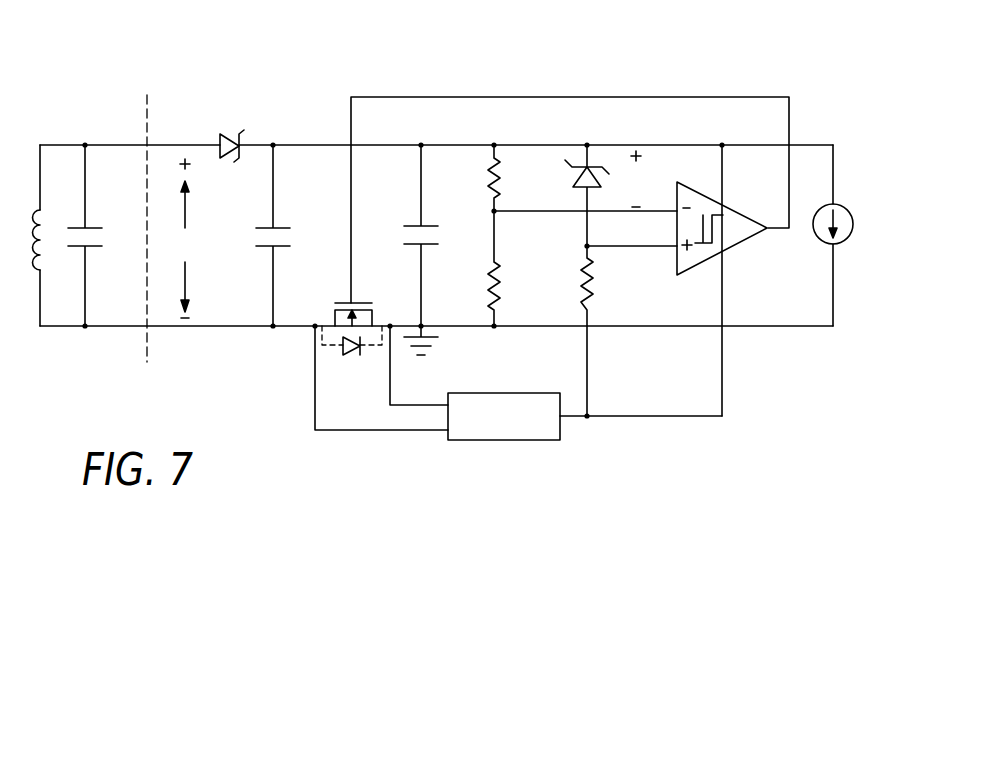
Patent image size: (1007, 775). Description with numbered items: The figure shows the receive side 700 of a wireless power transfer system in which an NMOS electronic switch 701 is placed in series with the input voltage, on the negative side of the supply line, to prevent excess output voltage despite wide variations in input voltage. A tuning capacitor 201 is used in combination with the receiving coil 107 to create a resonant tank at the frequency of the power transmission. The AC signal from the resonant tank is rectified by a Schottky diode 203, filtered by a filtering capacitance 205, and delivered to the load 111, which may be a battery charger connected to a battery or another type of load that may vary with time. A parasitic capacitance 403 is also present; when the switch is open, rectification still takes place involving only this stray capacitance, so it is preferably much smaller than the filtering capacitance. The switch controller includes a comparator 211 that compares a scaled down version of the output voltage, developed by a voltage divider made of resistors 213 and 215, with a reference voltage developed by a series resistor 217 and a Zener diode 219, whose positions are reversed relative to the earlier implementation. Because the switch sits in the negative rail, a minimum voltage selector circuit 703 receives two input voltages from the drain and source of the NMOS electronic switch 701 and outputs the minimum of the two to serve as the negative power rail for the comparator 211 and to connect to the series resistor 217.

The receive side 700 is at (150, 68).
The receiving coil 107 is at (32, 212).
The tuning capacitor 201 is at (88, 228).
The Schottky diode 203 is at (219, 141).
The parasitic capacitance 403 is at (270, 228).
The filtering capacitance 205 is at (416, 226).
The NMOS electronic switch 701 is at (336, 306).
The resistor 213 is at (488, 195).
The resistor 215 is at (494, 298).
The series resistor 217 is at (592, 298).
The Zener diode 219 is at (591, 165).
The comparator 211 is at (738, 246).
The load 111 is at (840, 206).
The minimum voltage selector circuit 703 is at (524, 443).